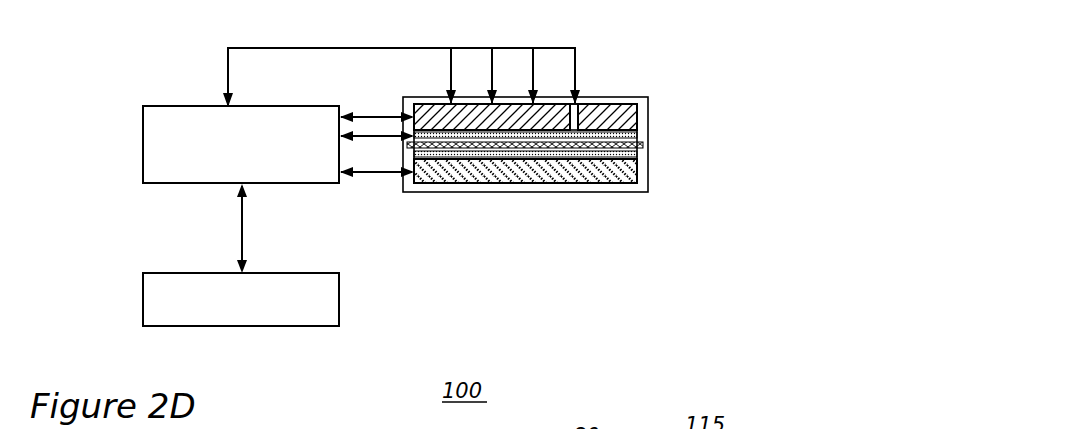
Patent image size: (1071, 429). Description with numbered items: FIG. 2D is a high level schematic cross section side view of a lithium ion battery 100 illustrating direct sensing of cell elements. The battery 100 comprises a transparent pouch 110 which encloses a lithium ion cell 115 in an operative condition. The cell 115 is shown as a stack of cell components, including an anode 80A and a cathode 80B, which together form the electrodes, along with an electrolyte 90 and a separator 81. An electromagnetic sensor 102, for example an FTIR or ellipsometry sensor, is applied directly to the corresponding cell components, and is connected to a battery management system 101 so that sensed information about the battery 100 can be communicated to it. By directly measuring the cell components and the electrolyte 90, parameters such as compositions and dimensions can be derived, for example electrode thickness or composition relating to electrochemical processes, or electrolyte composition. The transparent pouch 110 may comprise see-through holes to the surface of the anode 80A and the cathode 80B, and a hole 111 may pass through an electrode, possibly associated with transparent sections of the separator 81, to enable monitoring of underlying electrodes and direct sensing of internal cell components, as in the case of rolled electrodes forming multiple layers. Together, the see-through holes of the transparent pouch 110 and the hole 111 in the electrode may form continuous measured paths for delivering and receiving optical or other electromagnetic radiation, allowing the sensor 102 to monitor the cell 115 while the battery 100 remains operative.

The lithium ion battery 100 is at (191, 42).
The battery management system 101 is at (143, 293).
The electromagnetic sensor 102 is at (143, 123).
The transparent pouch 110 is at (650, 99).
The hole 111 is at (578, 110).
The lithium ion cell 115 is at (622, 81).
The anode 80A is at (637, 122).
The cathode 80B is at (640, 178).
The separator 81 is at (648, 153).
The electrolyte 90 is at (620, 135).